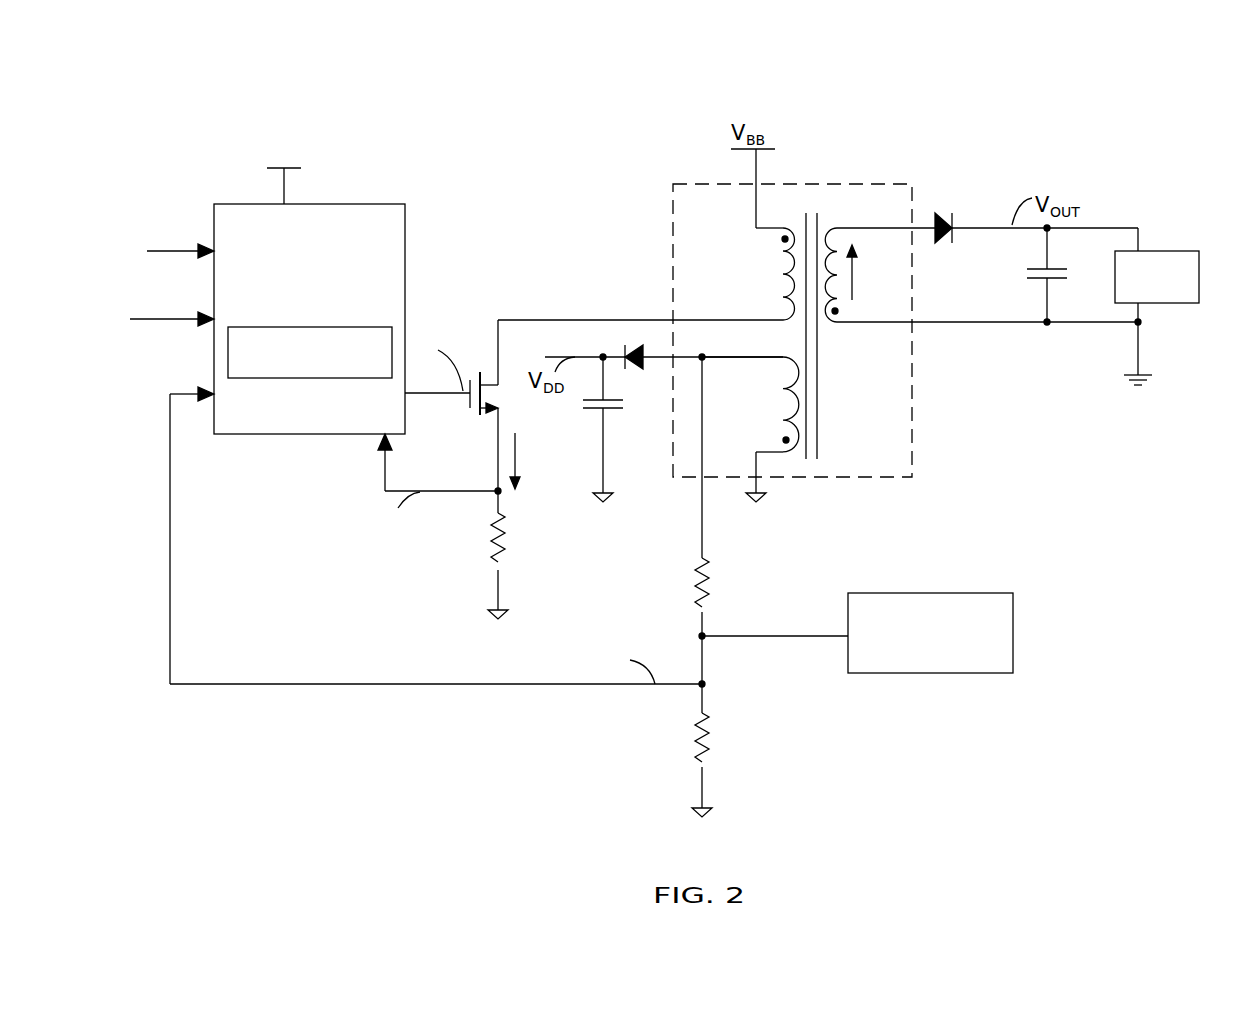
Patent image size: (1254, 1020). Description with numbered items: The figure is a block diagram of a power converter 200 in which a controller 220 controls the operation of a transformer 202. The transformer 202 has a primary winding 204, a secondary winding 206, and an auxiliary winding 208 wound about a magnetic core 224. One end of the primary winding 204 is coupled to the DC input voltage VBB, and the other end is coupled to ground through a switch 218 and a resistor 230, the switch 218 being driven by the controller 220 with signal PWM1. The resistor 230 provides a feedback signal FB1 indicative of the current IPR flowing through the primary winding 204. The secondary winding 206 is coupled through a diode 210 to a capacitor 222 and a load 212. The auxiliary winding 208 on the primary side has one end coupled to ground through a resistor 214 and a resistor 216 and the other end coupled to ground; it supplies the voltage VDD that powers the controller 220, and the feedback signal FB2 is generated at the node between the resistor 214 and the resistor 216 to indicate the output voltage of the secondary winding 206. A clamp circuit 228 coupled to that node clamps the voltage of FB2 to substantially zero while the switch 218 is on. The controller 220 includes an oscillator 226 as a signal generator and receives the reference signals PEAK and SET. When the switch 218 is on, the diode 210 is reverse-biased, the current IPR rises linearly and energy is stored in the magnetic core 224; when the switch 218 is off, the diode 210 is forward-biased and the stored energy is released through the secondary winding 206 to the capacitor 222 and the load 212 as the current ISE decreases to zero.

The power converter 200 is at (546, 108).
The transformer 202 is at (672, 265).
The primary winding 204 is at (787, 300).
The secondary winding 206 is at (832, 227).
The auxiliary winding 208 is at (787, 430).
The diode 210 is at (953, 221).
The load 212 is at (1175, 251).
The resistor 214 is at (707, 596).
The resistor 216 is at (707, 750).
The switch 218 is at (462, 404).
The controller 220 is at (350, 204).
The capacitor 222 is at (1035, 270).
The magnetic core 224 is at (818, 420).
The oscillator 226 is at (345, 327).
The clamp circuit 228 is at (930, 593).
The resistor 230 is at (503, 553).